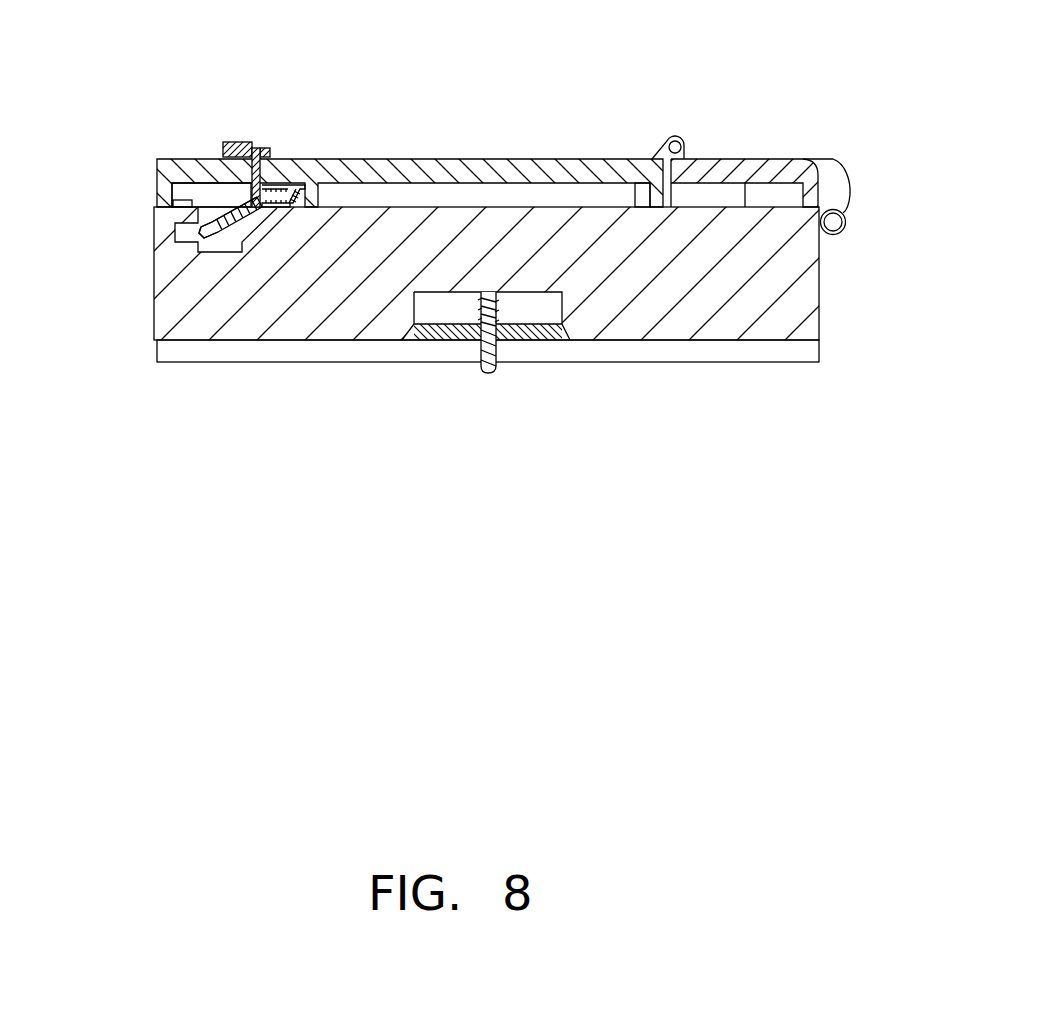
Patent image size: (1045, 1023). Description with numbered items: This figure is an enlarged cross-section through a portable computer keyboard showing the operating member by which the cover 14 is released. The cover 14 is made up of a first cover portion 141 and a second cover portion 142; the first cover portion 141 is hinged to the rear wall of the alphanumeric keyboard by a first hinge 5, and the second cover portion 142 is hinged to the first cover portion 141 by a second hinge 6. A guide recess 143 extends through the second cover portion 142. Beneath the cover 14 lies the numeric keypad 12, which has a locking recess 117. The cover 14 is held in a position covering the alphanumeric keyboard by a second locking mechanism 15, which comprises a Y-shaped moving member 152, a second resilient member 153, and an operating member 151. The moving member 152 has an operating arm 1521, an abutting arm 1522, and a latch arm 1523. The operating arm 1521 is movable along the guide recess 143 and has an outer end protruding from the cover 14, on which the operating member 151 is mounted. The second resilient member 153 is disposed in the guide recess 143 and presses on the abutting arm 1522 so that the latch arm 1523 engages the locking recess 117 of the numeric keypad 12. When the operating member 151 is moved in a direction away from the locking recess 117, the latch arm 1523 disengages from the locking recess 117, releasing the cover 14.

The first hinge 5 is at (836, 222).
The second hinge 6 is at (675, 136).
The numeric keypad 12 is at (190, 316).
The cover 14 is at (524, 131).
The second locking mechanism 15 is at (254, 240).
The locking recess 117 is at (182, 231).
The first cover portion 141 is at (718, 167).
The second cover portion 142 is at (617, 173).
The guide recess 143 is at (230, 197).
The operating member 151 is at (252, 158).
The moving member 152 is at (223, 214).
The second resilient member 153 is at (302, 186).
The operating arm 1521 is at (284, 207).
The abutting arm 1522 is at (286, 207).
The latch arm 1523 is at (198, 243).